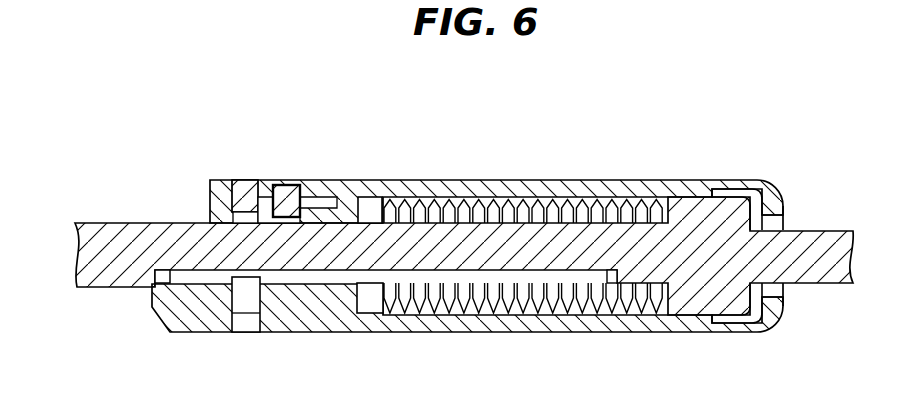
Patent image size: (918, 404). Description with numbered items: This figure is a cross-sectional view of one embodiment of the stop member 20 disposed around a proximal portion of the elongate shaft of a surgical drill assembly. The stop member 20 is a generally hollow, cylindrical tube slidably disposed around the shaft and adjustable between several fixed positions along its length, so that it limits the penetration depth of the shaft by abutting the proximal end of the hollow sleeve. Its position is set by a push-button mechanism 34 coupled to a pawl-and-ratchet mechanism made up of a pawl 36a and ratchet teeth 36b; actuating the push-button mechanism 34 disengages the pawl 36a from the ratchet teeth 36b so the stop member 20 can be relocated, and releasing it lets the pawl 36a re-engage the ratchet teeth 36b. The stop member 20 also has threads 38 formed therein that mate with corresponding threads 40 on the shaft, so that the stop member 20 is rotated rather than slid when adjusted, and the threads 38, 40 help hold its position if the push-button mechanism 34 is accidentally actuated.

The stop member 20 is at (703, 98).
The push-button mechanism 34 is at (248, 180).
The pawl 36a is at (247, 297).
The ratchet teeth 36b is at (203, 283).
The threads 38 is at (547, 197).
The threads 40 is at (520, 286).